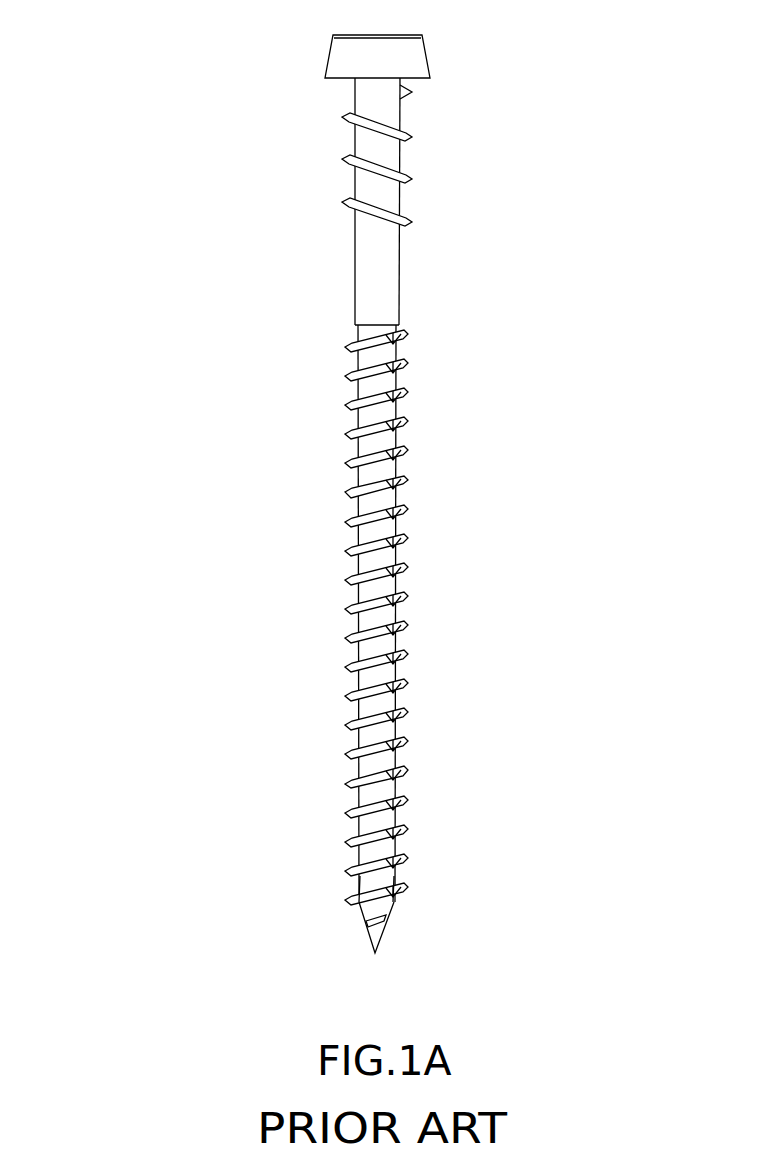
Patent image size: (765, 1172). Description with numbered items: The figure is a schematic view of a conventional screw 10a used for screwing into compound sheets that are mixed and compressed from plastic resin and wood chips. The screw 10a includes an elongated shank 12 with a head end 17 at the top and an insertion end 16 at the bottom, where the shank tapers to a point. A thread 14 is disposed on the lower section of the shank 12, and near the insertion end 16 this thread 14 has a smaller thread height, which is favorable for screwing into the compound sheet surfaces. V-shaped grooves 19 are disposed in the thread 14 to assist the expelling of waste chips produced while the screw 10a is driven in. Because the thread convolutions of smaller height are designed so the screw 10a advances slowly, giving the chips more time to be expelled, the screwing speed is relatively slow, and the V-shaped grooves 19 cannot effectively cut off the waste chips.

The conventional screw 10a is at (299, 500).
The head end 17 is at (410, 53).
The shank 12 is at (398, 467).
The thread 14 is at (400, 552).
The V-shaped grooves 19 is at (352, 862).
The insertion end 16 is at (383, 940).